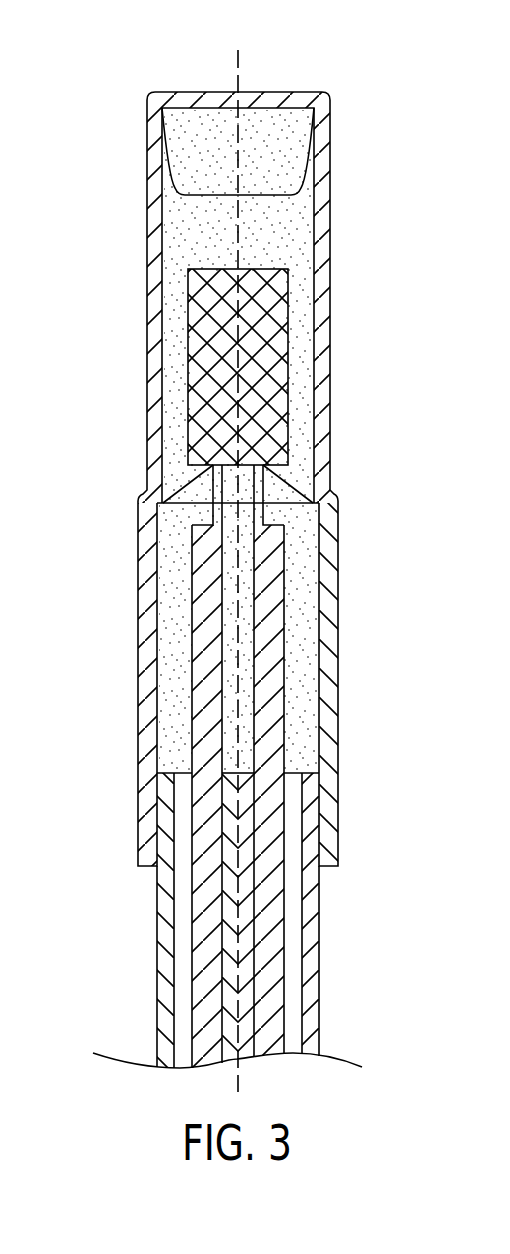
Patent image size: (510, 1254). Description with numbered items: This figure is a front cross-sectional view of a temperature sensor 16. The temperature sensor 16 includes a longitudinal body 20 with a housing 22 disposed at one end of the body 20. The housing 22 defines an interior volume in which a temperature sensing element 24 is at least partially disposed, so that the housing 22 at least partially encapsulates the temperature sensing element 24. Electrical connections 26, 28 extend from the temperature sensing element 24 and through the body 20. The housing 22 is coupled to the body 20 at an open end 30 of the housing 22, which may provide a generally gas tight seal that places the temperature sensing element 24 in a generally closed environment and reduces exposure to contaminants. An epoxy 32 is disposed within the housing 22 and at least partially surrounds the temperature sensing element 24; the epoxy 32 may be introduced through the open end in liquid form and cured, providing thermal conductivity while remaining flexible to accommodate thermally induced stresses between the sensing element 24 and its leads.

The temperature sensor 16 is at (84, 60).
The longitudinal body 20 is at (323, 990).
The housing 22 is at (317, 312).
The temperature sensing element 24 is at (280, 285).
The electrical connection 26 is at (178, 622).
The electrical connection 28 is at (285, 592).
The open end 30 is at (140, 858).
The epoxy 32 is at (190, 243).